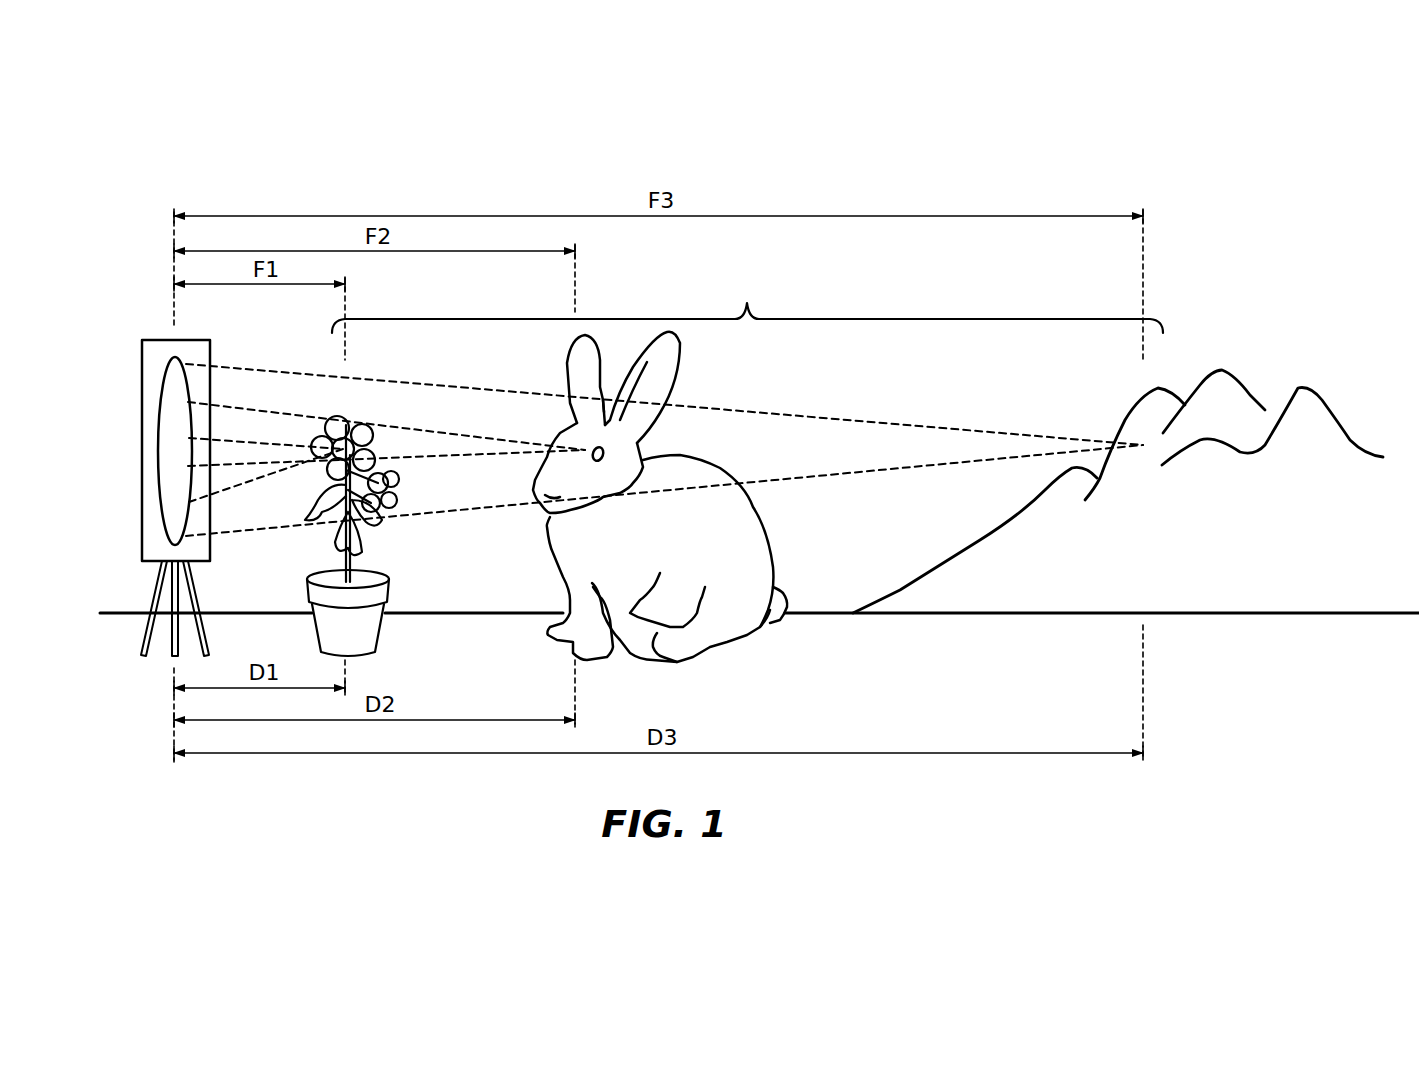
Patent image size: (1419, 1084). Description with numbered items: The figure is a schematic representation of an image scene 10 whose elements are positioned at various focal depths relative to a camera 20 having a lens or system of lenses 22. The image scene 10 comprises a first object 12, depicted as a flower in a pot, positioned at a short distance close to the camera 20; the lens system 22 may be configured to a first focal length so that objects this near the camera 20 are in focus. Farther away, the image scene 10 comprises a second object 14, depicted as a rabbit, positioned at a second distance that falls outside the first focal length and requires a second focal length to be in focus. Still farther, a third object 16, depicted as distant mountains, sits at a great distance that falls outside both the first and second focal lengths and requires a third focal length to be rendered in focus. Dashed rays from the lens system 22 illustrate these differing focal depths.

The image scene 10 is at (747, 302).
The first object 12 is at (366, 577).
The second object 14 is at (565, 425).
The third object 16 is at (1310, 388).
The camera 20 is at (158, 340).
The lens system 22 is at (160, 411).